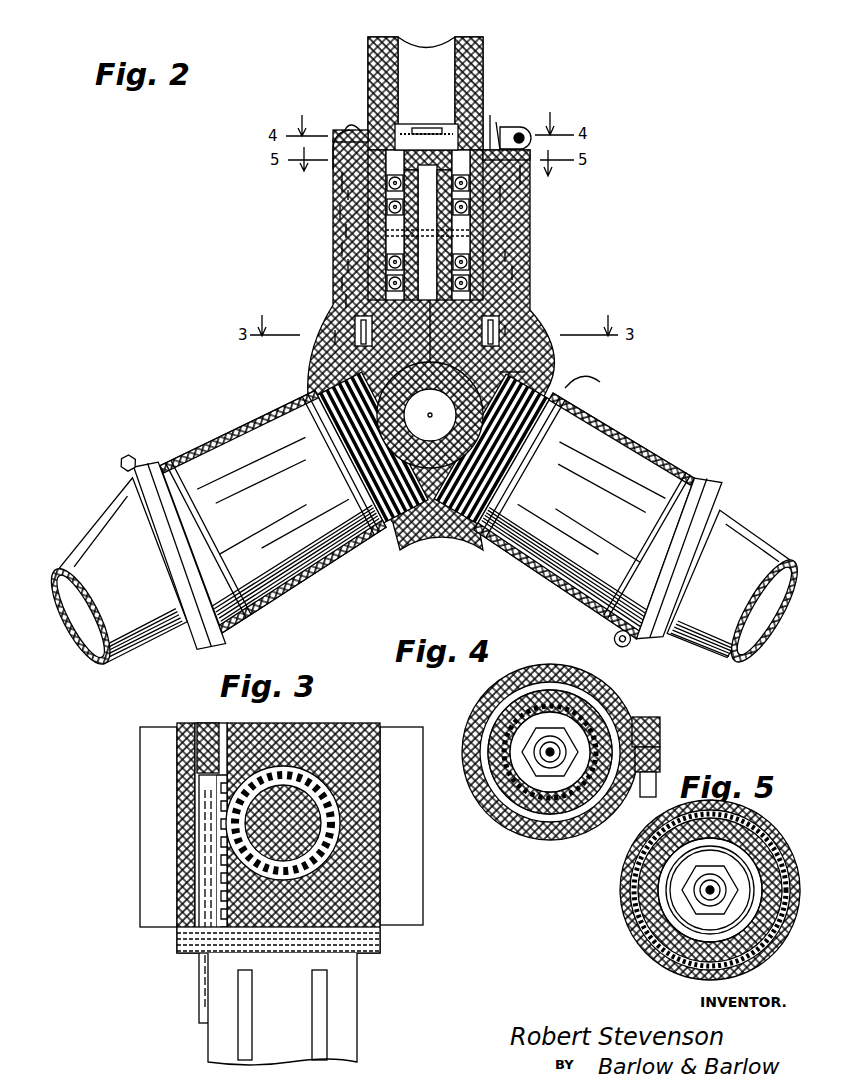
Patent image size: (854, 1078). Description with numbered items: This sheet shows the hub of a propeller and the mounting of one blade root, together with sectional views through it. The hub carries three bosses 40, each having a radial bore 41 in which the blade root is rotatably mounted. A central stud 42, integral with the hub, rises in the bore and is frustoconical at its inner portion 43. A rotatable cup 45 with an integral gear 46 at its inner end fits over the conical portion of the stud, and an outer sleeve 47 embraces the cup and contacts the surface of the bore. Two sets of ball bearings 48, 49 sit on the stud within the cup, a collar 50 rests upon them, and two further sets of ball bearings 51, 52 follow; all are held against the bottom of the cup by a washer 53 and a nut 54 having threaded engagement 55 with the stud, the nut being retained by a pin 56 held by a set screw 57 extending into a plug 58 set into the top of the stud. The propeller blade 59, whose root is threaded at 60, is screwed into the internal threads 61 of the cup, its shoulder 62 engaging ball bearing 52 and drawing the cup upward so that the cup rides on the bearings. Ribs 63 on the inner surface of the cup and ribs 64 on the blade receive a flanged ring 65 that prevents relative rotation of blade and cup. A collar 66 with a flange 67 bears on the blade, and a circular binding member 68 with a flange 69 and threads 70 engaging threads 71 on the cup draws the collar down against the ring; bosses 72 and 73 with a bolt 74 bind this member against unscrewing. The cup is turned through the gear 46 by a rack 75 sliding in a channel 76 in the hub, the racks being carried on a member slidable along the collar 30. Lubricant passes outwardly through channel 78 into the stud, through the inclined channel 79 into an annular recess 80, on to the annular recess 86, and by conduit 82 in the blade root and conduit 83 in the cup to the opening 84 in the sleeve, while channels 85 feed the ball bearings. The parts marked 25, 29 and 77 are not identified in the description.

In FIG. 2, the shaft 25 is at (426, 421).
In FIG. 2, the hub boss 29 is at (512, 378).
In FIG. 3, the collar 30 is at (340, 992).
In FIG. 2, the boss 40 is at (633, 422).
In FIG. 3, the boss 40 is at (352, 727).
In FIG. 5, the boss 40 is at (773, 830).
In FIG. 2, the bore 41 is at (670, 452).
In FIG. 2, the central stud 42 is at (343, 231).
In FIG. 2, the frustoconical inner portion 43 is at (505, 331).
In FIG. 3, the frustoconical inner portion 43 is at (278, 940).
In FIG. 2, the rotatable cup 45 is at (340, 249).
In FIG. 5, the rotatable cup 45 is at (760, 955).
In FIG. 2, the gear 46 is at (350, 445).
In FIG. 2, the outer sleeve 47 is at (700, 470).
In FIG. 2, the ball bearings 48 is at (343, 301).
In FIG. 3, the ball bearings 48 is at (290, 880).
In FIG. 2, the ball bearings 49 is at (340, 283).
In FIG. 2, the collar 50 is at (345, 266).
In FIG. 2, the ball bearings 51 is at (338, 213).
In FIG. 2, the ball bearings 52 is at (345, 195).
In FIG. 2, the washer 53 is at (500, 195).
In FIG. 2, the nut 54 is at (490, 118).
In FIG. 4, the nut 54 is at (540, 815).
In FIG. 5, the nut 54 is at (682, 985).
In FIG. 2, the threaded engagement 55 is at (496, 125).
In FIG. 2, the pin 56 is at (414, 130).
In FIG. 2, the set screw 57 is at (444, 130).
In FIG. 4, the set screw 57 is at (530, 805).
In FIG. 2, the plug 58 is at (424, 124).
In FIG. 4, the plug 58 is at (512, 797).
In FIG. 2, the propeller blade 59 is at (486, 46).
In FIG. 4, the propeller blade 59 is at (580, 842).
In FIG. 5, the propeller blade 59 is at (625, 884).
In FIG. 2, the threads 60 is at (505, 256).
In FIG. 2, the internal threads 61 is at (508, 273).
In FIG. 2, the shoulder 62 is at (340, 182).
In FIG. 5, the ribs 63 is at (656, 975).
In FIG. 5, the ribs 64 is at (626, 916).
In FIG. 2, the flanged ring 65 is at (508, 185).
In FIG. 5, the flanged ring 65 is at (640, 945).
In FIG. 2, the collar 66 is at (494, 126).
In FIG. 2, the flange 67 is at (523, 128).
In FIG. 2, the circular binding member 68 is at (346, 130).
In FIG. 4, the circular binding member 68 is at (612, 692).
In FIG. 2, the flange 69 is at (352, 128).
In FIG. 2, the threads 70 is at (333, 138).
In FIG. 2, the threads 71 is at (333, 152).
In FIG. 4, the boss 72 is at (660, 740).
In FIG. 4, the boss 73 is at (658, 772).
In FIG. 2, the bolt 74 is at (615, 639).
In FIG. 4, the bolt 74 is at (655, 727).
In FIG. 2, the rack 75 is at (353, 325).
In FIG. 3, the rack 75 is at (205, 960).
In FIG. 2, the channel 76 is at (333, 337).
In FIG. 3, the channel 76 is at (207, 725).
In FIG. 2, the hub 77 is at (430, 415).
In FIG. 2, the channel 78 is at (322, 358).
In FIG. 2, the inclined channel 79 is at (427, 317).
In FIG. 2, the annular recess 80 is at (427, 232).
In FIG. 2, the conduit 82 is at (470, 212).
In FIG. 2, the conduit 83 is at (470, 221).
In FIG. 2, the opening 84 is at (470, 240).
In FIG. 2, the channels 85 is at (530, 203).
In FIG. 2, the annular recess 86 is at (515, 246).